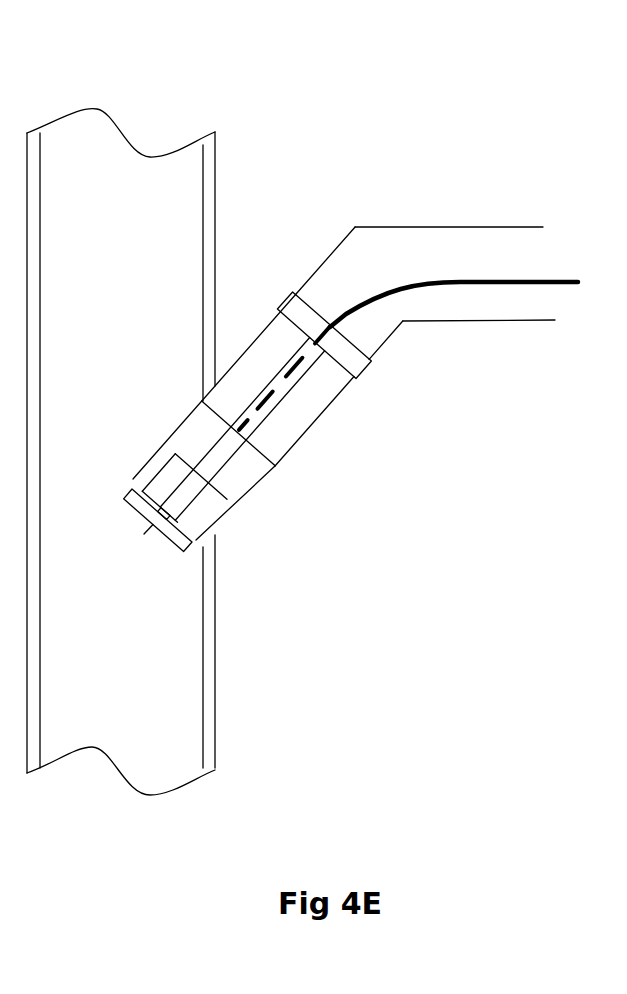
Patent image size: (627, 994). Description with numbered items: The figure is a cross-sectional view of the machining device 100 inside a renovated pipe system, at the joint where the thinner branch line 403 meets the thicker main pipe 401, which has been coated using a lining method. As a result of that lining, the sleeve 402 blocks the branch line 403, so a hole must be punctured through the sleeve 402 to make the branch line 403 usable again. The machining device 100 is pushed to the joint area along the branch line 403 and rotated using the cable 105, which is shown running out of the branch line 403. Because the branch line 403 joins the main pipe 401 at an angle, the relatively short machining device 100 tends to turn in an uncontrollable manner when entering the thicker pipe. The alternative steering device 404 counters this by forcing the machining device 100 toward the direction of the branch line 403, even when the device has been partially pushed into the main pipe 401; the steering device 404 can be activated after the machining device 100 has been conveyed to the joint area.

The machining device 100 is at (177, 423).
The cable 105 is at (565, 270).
The pipe 401 is at (87, 118).
The sleeve 402 is at (217, 523).
The branch line 403 is at (377, 226).
The steering device 404 is at (297, 308).